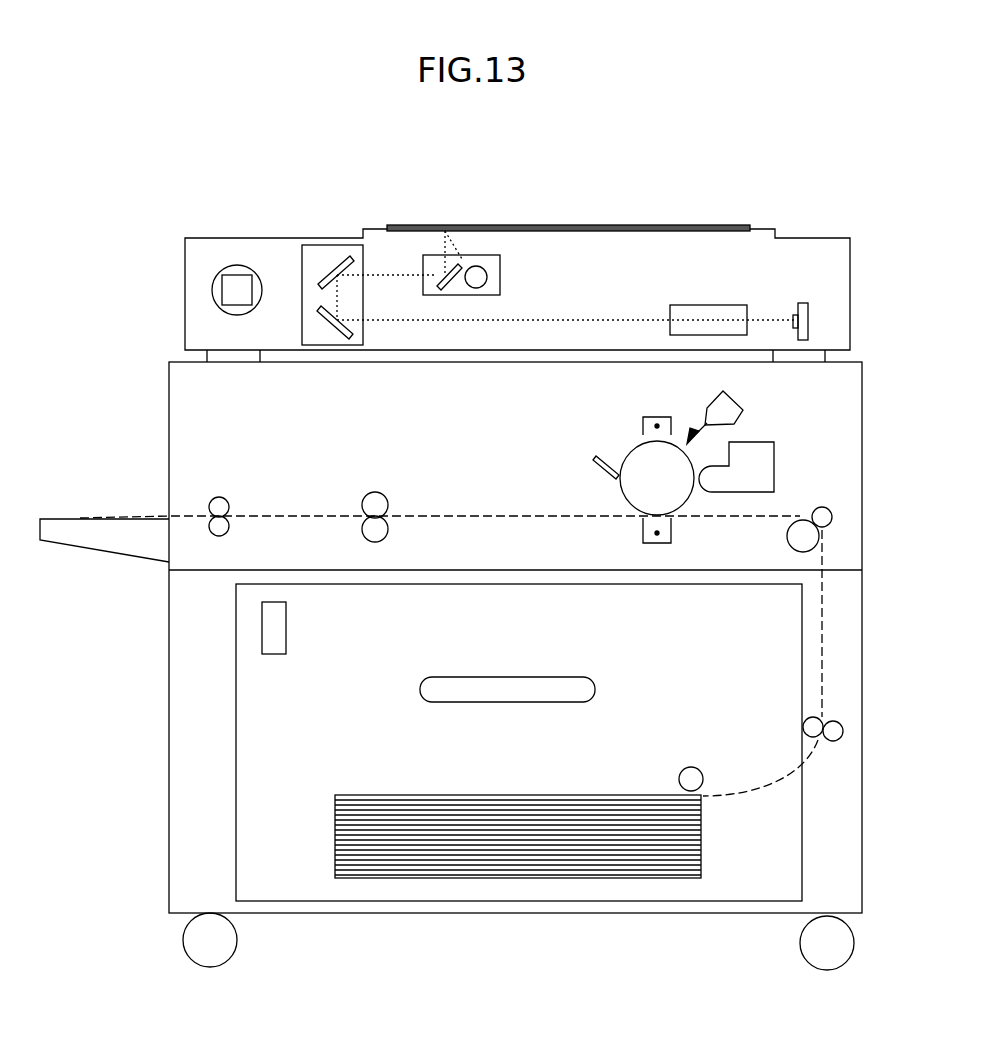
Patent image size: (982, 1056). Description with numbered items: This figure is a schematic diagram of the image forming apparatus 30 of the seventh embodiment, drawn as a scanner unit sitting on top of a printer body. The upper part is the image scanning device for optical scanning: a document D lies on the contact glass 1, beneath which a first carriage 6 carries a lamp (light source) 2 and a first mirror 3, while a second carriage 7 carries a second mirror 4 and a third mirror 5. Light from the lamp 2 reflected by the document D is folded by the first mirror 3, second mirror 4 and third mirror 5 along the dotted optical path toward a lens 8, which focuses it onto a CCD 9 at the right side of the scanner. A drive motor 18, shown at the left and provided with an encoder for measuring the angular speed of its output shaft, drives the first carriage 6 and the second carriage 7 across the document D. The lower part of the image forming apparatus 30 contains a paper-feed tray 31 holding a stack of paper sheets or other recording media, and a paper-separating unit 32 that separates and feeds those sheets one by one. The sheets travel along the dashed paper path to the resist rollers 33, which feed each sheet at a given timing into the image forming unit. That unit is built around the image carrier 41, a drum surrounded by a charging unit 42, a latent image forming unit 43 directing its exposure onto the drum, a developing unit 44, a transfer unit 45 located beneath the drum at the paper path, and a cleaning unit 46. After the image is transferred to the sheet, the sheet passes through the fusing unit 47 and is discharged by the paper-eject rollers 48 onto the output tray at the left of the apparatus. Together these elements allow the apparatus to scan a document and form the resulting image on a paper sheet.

The contact glass 1 is at (755, 236).
The document D is at (620, 226).
The drive motor 18 is at (212, 289).
The second carriage 7 is at (360, 250).
The second mirror 4 is at (352, 256).
The third mirror 5 is at (322, 310).
The first carriage 6 is at (498, 262).
The first mirror 3 is at (463, 262).
The lamp (light source) 2 is at (480, 268).
The lens 8 is at (753, 310).
The CCD 9 is at (808, 314).
The image forming apparatus 30 is at (608, 926).
The paper-feed tray 31 is at (236, 728).
The paper-separating unit 32 is at (690, 766).
The resist rollers 33 is at (800, 552).
The image carrier 41 is at (688, 506).
The charging unit 42 is at (643, 428).
The latent image forming unit 43 is at (743, 410).
The developing unit 44 is at (774, 478).
The transfer unit 45 is at (643, 530).
The cleaning unit 46 is at (594, 458).
The fusing unit 47 is at (375, 492).
The paper-eject rollers 48 is at (218, 497).